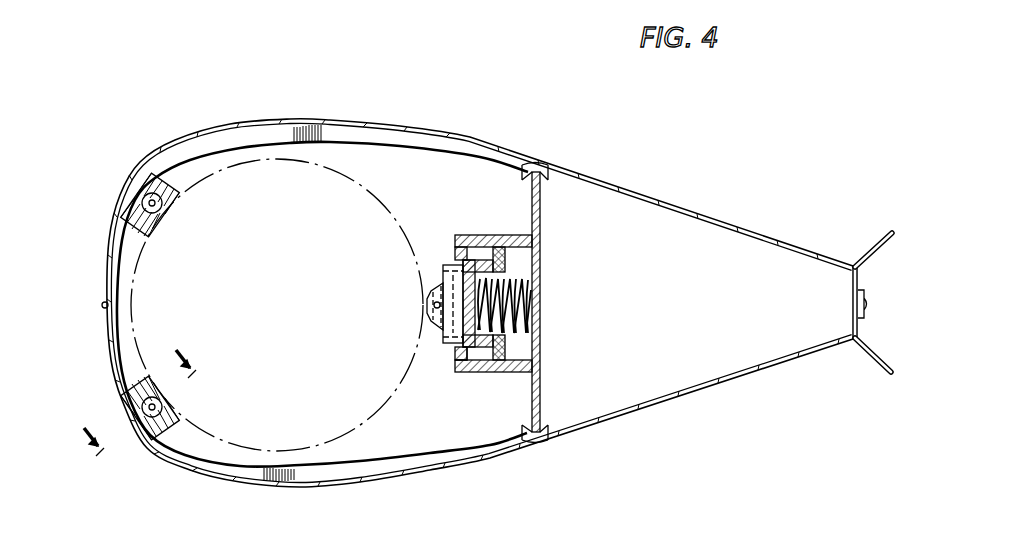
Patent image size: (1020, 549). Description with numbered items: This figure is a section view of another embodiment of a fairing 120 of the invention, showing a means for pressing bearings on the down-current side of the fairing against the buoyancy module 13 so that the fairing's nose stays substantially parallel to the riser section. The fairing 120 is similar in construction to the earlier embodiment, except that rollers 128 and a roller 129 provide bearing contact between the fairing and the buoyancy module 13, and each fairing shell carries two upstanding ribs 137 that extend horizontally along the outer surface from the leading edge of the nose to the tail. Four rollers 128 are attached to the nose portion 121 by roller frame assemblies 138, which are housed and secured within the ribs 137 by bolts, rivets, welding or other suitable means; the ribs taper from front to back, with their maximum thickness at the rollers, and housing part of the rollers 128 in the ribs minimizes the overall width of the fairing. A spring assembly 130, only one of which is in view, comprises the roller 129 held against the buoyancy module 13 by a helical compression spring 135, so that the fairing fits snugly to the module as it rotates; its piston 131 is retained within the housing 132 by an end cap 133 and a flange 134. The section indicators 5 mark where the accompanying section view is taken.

The fairing 120 is at (110, 178).
The nose portion 121 is at (190, 140).
The upstanding ribs 137 is at (326, 124).
The buoyancy module 13 is at (385, 400).
The roller frame assemblies 138 is at (138, 216).
The rollers 128 is at (165, 208).
The section line 5- 5 is at (129, 395).
The spring assemblies 130 is at (490, 235).
The housing 132 is at (520, 373).
The end cap 133 is at (455, 365).
The flange 134 is at (508, 260).
The piston 131 is at (452, 262).
The roller 129 is at (427, 305).
The helical compression spring 135 is at (524, 306).